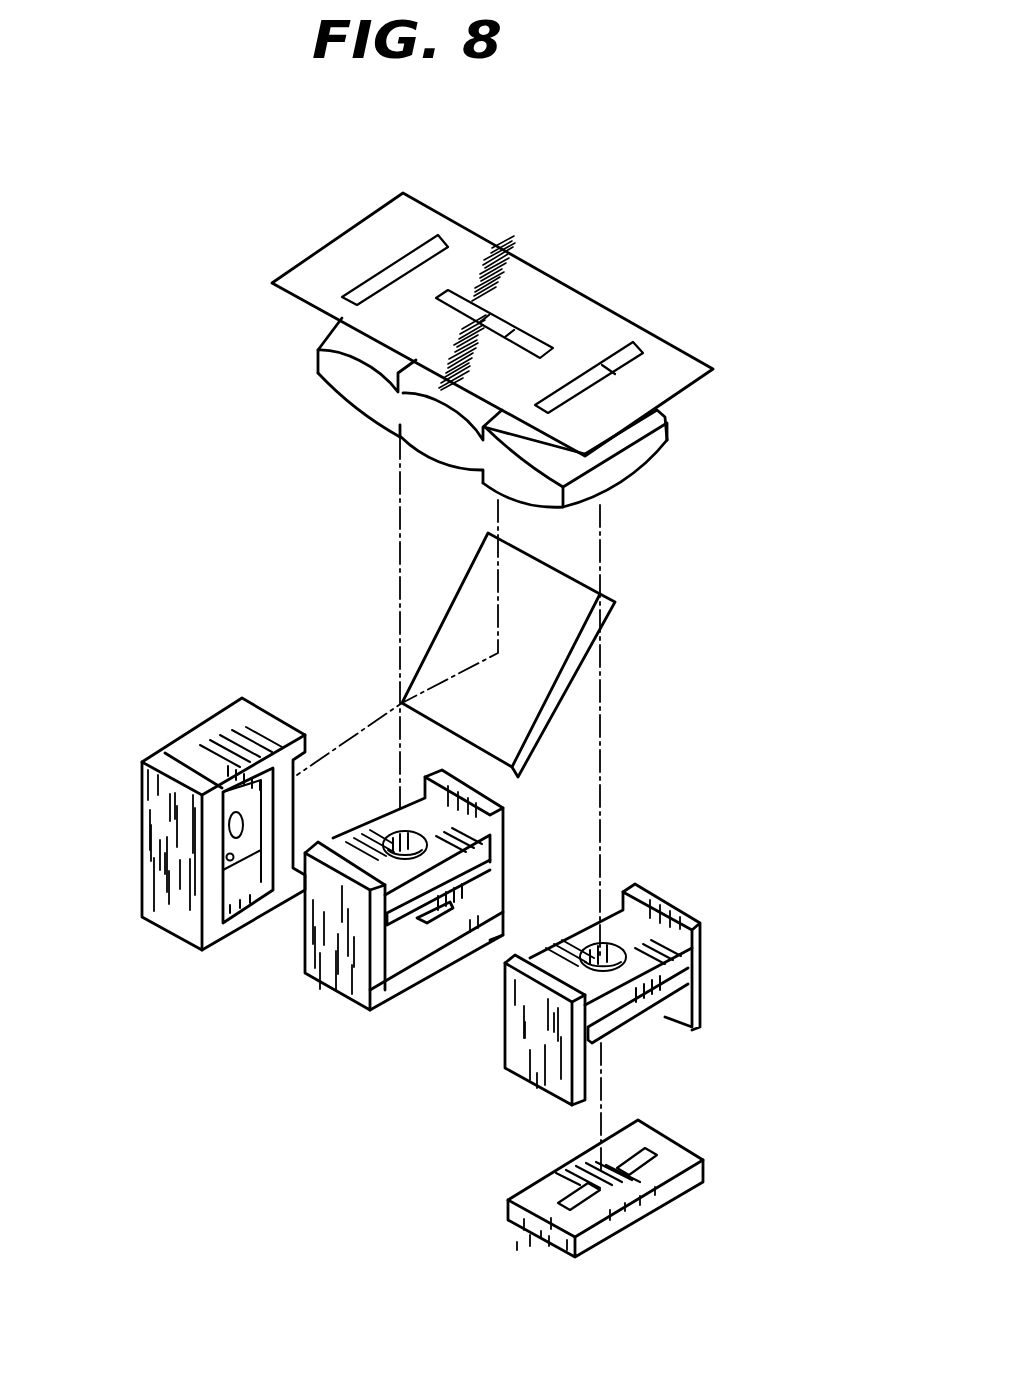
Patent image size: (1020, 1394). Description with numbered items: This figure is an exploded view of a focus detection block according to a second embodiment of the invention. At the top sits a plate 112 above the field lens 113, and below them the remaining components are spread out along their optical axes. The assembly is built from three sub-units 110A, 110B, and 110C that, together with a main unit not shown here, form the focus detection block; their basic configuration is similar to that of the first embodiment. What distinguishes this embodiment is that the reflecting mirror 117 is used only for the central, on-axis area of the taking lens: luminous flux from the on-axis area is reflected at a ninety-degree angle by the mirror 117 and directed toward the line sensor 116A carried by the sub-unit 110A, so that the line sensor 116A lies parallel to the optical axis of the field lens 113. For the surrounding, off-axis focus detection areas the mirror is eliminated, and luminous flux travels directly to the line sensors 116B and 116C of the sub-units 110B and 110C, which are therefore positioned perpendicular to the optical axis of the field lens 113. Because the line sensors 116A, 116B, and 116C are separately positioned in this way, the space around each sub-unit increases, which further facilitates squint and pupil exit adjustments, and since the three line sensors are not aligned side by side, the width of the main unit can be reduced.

The slit plate 112 is at (314, 268).
The field lens 113 is at (320, 363).
The reflecting mirror 117 is at (565, 600).
The sub-unit 110A is at (212, 735).
The sub-unit 110B is at (322, 930).
The sub-unit 110C is at (702, 960).
The line sensor 116A is at (157, 877).
The line sensor 116B is at (400, 1012).
The line sensor 116C is at (636, 1215).